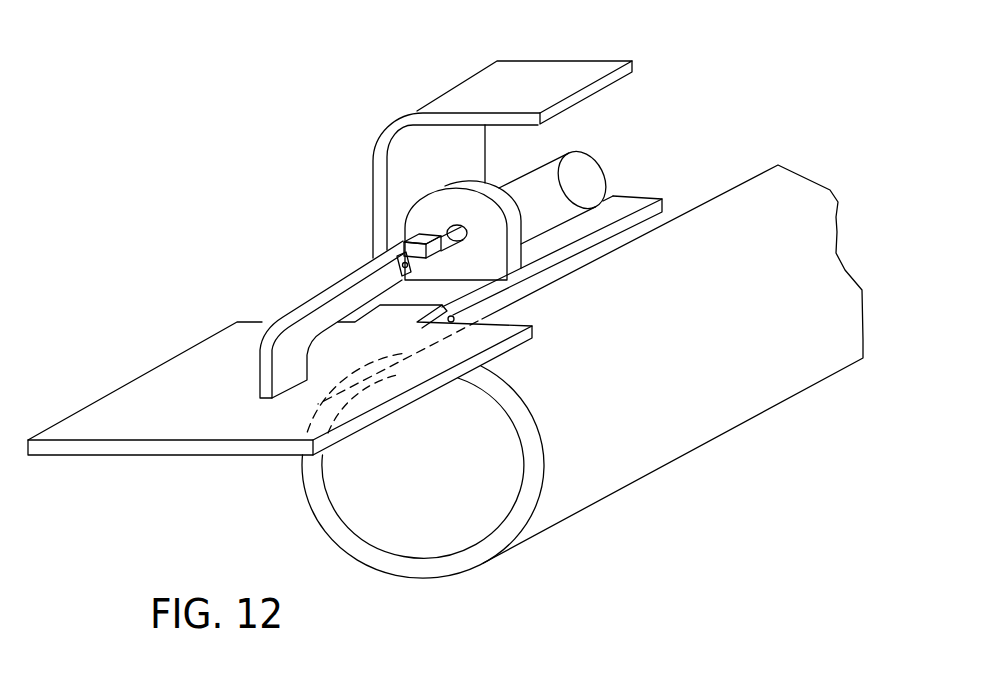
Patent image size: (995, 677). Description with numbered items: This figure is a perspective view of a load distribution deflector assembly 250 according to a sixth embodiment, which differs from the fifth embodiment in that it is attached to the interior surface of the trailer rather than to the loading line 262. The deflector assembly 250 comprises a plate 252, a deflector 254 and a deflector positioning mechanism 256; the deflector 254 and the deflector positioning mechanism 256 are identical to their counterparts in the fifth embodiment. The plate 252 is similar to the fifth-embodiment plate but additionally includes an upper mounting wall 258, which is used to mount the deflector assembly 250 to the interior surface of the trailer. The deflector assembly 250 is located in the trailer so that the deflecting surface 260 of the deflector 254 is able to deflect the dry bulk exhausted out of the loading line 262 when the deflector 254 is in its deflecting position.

The deflector assembly 250 is at (259, 197).
The plate 252 is at (608, 210).
The deflector 254 is at (148, 402).
The deflector positioning mechanism 256 is at (570, 167).
The upper mounting wall 258 is at (543, 77).
The deflecting surface 260 is at (222, 363).
The loading line 262 is at (633, 460).